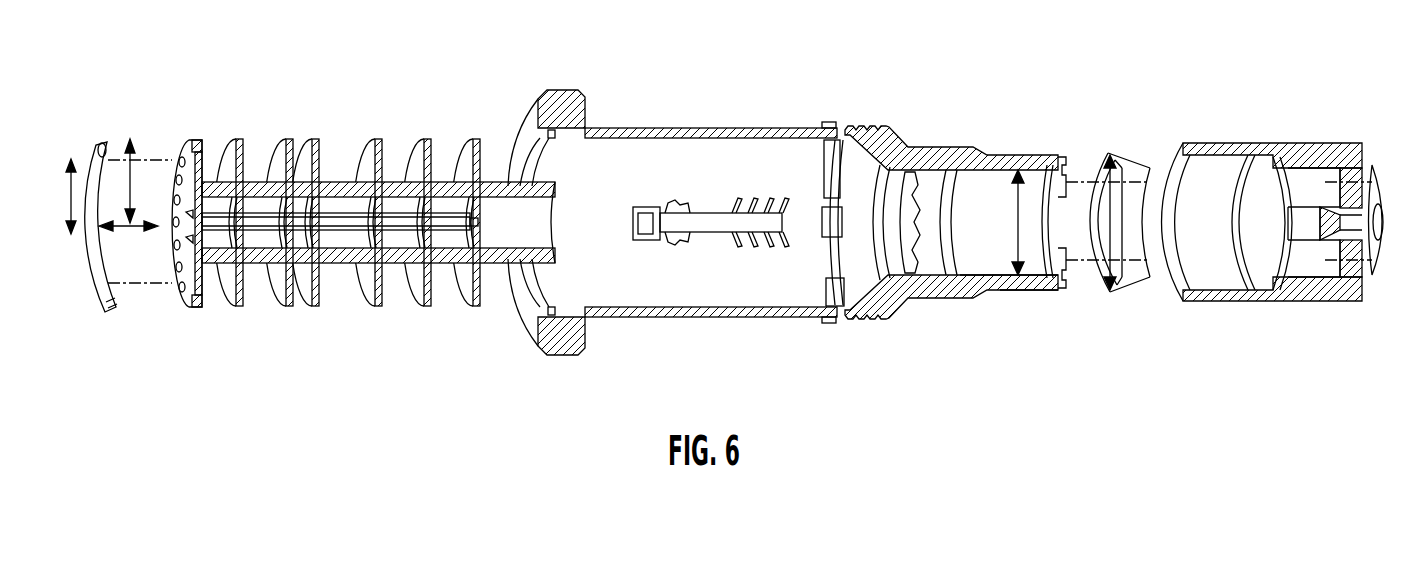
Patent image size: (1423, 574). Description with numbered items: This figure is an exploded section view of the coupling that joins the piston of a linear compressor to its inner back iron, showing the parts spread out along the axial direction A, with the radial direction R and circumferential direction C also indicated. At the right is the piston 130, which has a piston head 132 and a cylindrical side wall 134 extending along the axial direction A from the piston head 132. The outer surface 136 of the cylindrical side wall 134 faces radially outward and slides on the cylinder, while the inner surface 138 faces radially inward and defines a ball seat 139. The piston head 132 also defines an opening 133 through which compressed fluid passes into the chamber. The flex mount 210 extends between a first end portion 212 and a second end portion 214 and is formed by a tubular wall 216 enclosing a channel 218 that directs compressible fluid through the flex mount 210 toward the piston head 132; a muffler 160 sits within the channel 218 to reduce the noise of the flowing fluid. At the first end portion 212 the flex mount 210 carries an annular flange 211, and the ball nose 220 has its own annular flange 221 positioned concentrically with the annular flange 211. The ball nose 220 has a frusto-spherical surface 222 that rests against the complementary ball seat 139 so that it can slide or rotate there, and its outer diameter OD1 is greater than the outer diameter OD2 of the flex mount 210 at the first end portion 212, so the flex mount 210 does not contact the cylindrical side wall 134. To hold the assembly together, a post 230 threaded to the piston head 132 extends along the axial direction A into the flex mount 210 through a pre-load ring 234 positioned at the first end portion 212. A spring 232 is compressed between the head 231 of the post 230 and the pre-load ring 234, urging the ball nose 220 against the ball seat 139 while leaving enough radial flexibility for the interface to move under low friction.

The piston 130 is at (1286, 207).
The piston head 132 is at (1345, 170).
The opening 133 is at (1346, 280).
The cylindrical side wall 134 is at (1237, 295).
The outer surface 136 is at (1208, 135).
The inner surface 138 is at (1248, 178).
The ball seat 139 is at (1250, 226).
The muffler 160 is at (340, 192).
The flex mount 210 is at (680, 138).
The annular flange 211 is at (1072, 283).
The first end portion 212 is at (1053, 312).
The second end portion 214 is at (529, 84).
The tubular wall 216 is at (982, 233).
The channel 218 is at (990, 276).
The ball nose 220 is at (1132, 204).
The annular flange 221 is at (1094, 200).
The frusto-spherical surface 222 is at (1136, 300).
The post 230 is at (699, 209).
The head 231 is at (645, 240).
The spring 232 is at (748, 206).
The pre-load ring 234 is at (920, 272).
The outer diameter of ball nose OD1 is at (1130, 217).
The outer diameter of flex mount OD2 is at (1017, 222).
The circumferential direction C is at (70, 197).
The radial direction R is at (131, 160).
The axial direction A is at (128, 229).